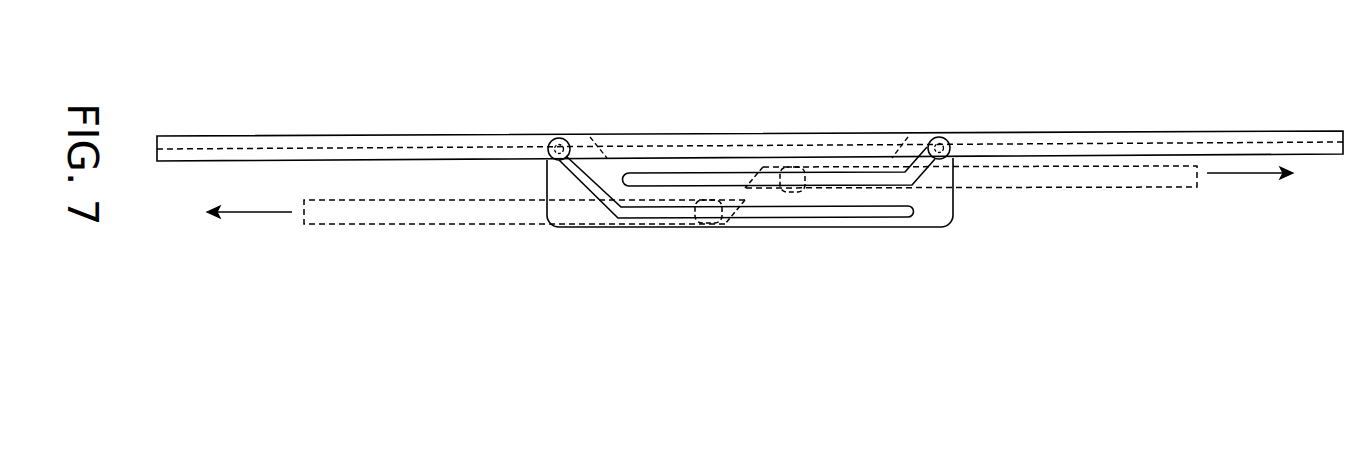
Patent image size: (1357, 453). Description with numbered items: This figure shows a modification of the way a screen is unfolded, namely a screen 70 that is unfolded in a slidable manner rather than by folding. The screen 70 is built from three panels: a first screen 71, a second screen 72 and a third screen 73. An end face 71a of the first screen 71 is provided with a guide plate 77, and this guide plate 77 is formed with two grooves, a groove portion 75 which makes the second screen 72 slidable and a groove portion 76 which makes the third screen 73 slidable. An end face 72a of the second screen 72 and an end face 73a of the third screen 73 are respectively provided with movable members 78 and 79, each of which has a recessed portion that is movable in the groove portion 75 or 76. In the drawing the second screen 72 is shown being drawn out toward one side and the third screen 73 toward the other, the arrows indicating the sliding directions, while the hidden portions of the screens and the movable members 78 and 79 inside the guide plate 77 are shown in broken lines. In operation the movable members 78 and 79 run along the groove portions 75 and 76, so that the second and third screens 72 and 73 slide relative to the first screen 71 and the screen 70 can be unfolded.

The screen 70 is at (1211, 82).
The first screen 71 is at (670, 137).
The end face of first screen 71a is at (755, 143).
The second screen 72 is at (1115, 132).
The end face of second screen 72a is at (770, 186).
The third screen 73 is at (392, 137).
The end face of third screen 73a is at (741, 228).
The groove portion 75 is at (843, 180).
The groove portion 76 is at (868, 212).
The guide plate 77 is at (917, 227).
The movable member 78 is at (805, 192).
The movable member 79 is at (727, 224).